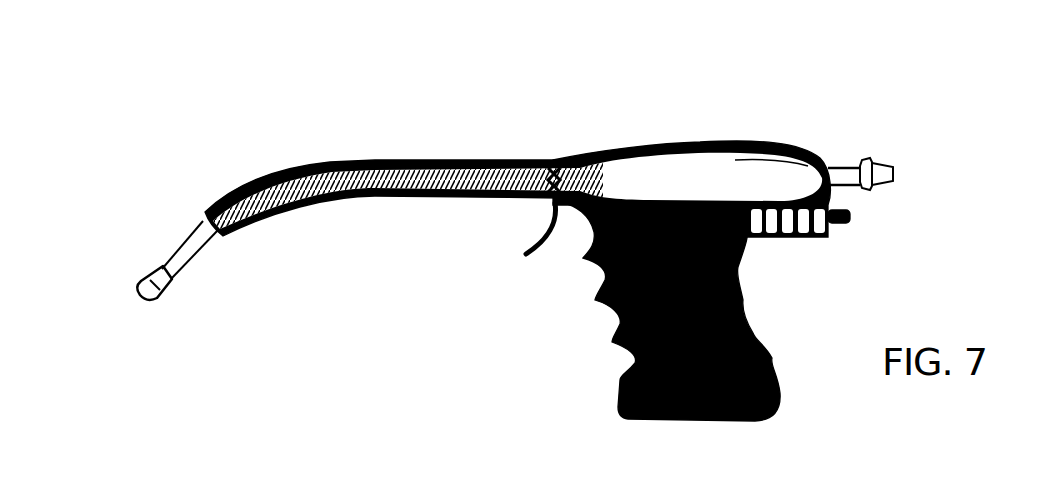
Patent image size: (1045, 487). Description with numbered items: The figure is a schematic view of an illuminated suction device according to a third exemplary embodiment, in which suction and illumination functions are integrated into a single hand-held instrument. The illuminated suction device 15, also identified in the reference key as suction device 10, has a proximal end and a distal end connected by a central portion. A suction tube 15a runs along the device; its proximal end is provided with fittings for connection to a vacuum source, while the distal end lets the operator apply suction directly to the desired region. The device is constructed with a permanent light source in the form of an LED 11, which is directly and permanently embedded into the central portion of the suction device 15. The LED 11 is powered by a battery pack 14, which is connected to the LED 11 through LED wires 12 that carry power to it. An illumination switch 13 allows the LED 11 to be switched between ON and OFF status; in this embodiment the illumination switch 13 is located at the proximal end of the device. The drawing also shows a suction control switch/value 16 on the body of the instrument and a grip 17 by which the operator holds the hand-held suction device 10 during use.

The suction device 10 is at (70, 113).
The LED 11 is at (193, 206).
The LED wires 12 is at (455, 152).
The illumination switch 13 is at (865, 216).
The battery pack 14 is at (803, 245).
The suction device 15 is at (552, 152).
The suction tube 15a is at (318, 163).
The suction control switch/value 16 is at (543, 250).
The grip 17 is at (617, 363).